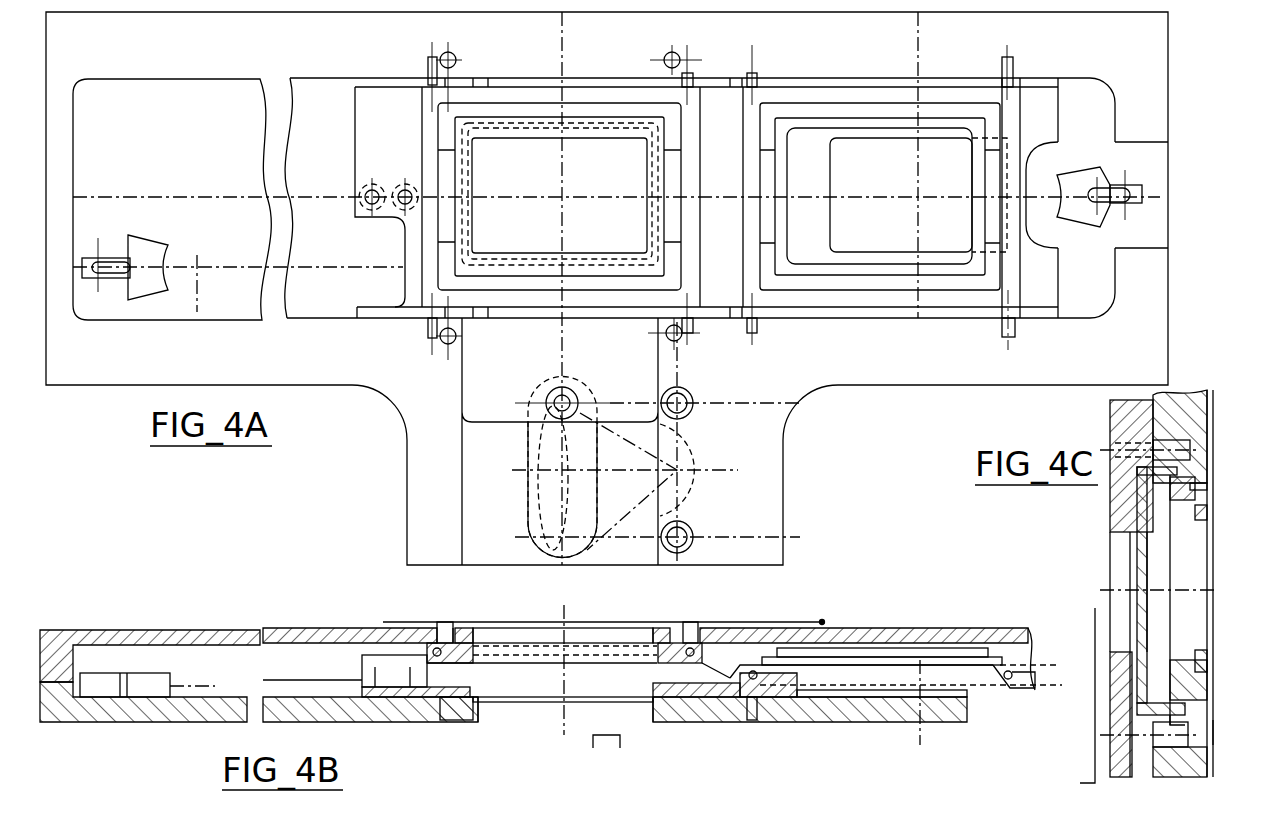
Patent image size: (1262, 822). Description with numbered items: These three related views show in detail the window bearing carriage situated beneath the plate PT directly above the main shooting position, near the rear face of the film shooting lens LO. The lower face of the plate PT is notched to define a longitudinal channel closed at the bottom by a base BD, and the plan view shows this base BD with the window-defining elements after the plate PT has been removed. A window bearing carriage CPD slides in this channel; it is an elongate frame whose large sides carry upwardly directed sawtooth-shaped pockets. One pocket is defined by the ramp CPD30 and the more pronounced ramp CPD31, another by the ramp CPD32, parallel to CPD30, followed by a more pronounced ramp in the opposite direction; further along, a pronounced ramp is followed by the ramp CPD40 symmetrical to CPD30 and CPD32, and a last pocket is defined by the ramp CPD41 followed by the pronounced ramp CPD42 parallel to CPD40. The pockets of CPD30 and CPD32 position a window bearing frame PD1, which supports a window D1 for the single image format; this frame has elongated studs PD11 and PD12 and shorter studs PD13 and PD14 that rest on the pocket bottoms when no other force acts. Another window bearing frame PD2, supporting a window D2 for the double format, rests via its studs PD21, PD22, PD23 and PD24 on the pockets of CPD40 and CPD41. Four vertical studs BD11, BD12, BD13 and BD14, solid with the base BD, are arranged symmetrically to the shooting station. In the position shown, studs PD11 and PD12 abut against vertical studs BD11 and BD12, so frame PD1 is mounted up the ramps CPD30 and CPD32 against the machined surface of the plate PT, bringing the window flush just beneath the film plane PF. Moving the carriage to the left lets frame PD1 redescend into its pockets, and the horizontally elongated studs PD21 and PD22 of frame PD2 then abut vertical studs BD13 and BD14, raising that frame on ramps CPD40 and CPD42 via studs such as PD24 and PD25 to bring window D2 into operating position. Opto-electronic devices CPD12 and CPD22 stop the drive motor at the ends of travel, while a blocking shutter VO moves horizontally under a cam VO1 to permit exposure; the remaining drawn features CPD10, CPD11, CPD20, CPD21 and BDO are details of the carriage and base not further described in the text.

In FIG. 4A, the base BD is at (883, 362).
In FIG. 4B, the base BD is at (210, 712).
In FIG. 4C, the base BD is at (1120, 693).
In FIG. 4A, the window bearing carriage CPD is at (380, 98).
In FIG. 4B, the window bearing carriage CPD is at (340, 650).
In FIG. 4C, the window bearing carriage CPD is at (1140, 513).
In FIG. 4A, the carrier plate cutout CPD10 is at (405, 248).
In FIG. 4A, the carrier plate center line CPD11 is at (314, 268).
In FIG. 4A, the opto-electronic device CPD12 is at (98, 252).
In FIG. 4A, the carrier plate notch CPD20 is at (1027, 228).
In FIG. 4A, the carrier plate locating element CPD21 is at (1030, 192).
In FIG. 4A, the opto-electronic device CPD22 is at (1120, 190).
In FIG. 4B, the ramp CPD30 is at (430, 663).
In FIG. 4B, the ramp CPD31 is at (508, 702).
In FIG. 4B, the ramp CPD32 is at (712, 690).
In FIG. 4B, the ramp CPD40 is at (795, 680).
In FIG. 4B, the ramp CPD41 is at (985, 700).
In FIG. 4B, the ramp CPD42 is at (1015, 692).
In FIG. 4A, the elongated stud PD11 is at (420, 325).
In FIG. 4B, the elongated stud PD11 is at (430, 650).
In FIG. 4A, the elongated stud PD12 is at (428, 62).
In FIG. 4A, the shorter stud PD13 is at (693, 74).
In FIG. 4A, the shorter stud PD14 is at (695, 325).
In FIG. 4B, the shorter stud PD14 is at (692, 648).
In FIG. 4A, the horizontally elongated stud PD21 is at (1000, 330).
In FIG. 4A, the horizontally elongated stud PD22 is at (1003, 62).
In FIG. 4A, the stud PD23 is at (762, 74).
In FIG. 4A, the stud PD24 is at (762, 323).
In FIG. 4B, the stud PD24 is at (750, 722).
In FIG. 4B, the stud PD25 is at (1010, 670).
In FIG. 4B, the window bearing frame PD1 is at (457, 623).
In FIG. 4C, the window bearing frame PD1 is at (1197, 487).
In FIG. 4B, the window bearing frame PD2 is at (758, 680).
In FIG. 4A, the vertical stud BD11 is at (462, 345).
In FIG. 4A, the vertical stud BD12 is at (458, 58).
In FIG. 4A, the vertical stud BD13 is at (665, 55).
In FIG. 4C, the vertical stud BD13 is at (1158, 445).
In FIG. 4A, the vertical stud BD14 is at (678, 345).
In FIG. 4C, the vertical stud BD14 is at (1182, 730).
In FIG. 4B, the base plate opening BDO is at (630, 712).
In FIG. 4A, the blocking shutter VO is at (477, 390).
In FIG. 4B, the blocking shutter VO is at (487, 660).
In FIG. 4C, the blocking shutter VO is at (1133, 775).
In FIG. 4A, the cam VO1 is at (565, 390).
In FIG. 4B, the plate PT is at (62, 635).
In FIG. 4C, the plate PT is at (1200, 765).
In FIG. 4B, the film plane PF is at (784, 622).
In FIG. 4C, the film plane PF is at (1213, 725).
In FIG. 4B, the window D1 is at (474, 623).
In FIG. 4C, the window D1 is at (1200, 525).
In FIG. 4B, the window D2 is at (874, 652).
In FIG. 4B, the film shooting lens LO is at (595, 753).
In FIG. 4C, the film shooting lens LO is at (1080, 783).